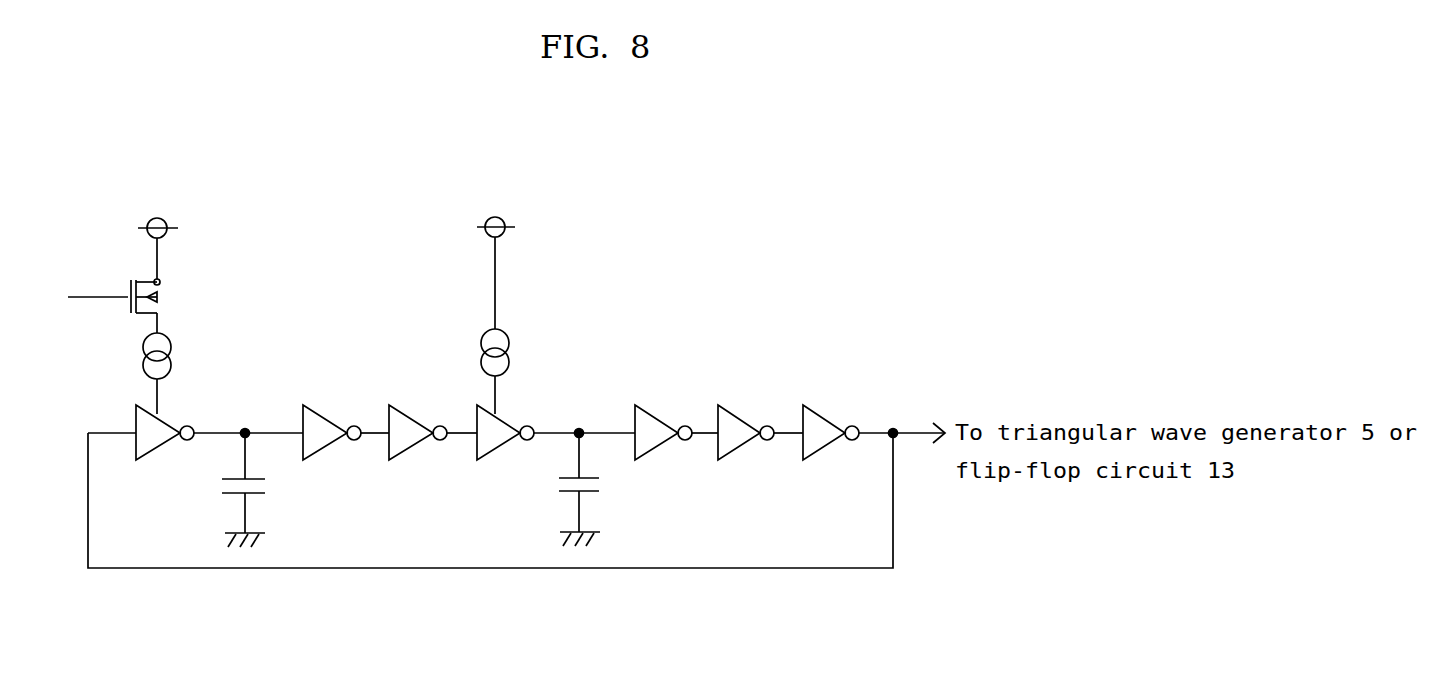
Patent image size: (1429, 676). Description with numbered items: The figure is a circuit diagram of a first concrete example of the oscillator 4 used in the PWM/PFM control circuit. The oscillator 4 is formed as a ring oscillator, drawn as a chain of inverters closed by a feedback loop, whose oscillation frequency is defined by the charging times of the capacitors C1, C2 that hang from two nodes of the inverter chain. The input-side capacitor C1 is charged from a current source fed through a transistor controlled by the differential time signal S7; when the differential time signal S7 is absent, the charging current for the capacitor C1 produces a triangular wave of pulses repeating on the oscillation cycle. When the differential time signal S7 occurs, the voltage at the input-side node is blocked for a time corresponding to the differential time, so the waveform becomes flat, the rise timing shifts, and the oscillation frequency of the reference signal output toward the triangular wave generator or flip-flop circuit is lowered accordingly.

The oscillator 4 is at (745, 268).
The differential time signal S7 is at (113, 306).
The input-side capacitor C1 is at (263, 492).
The capacitor C2 is at (604, 491).